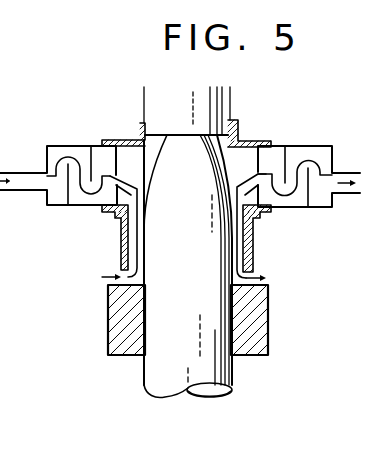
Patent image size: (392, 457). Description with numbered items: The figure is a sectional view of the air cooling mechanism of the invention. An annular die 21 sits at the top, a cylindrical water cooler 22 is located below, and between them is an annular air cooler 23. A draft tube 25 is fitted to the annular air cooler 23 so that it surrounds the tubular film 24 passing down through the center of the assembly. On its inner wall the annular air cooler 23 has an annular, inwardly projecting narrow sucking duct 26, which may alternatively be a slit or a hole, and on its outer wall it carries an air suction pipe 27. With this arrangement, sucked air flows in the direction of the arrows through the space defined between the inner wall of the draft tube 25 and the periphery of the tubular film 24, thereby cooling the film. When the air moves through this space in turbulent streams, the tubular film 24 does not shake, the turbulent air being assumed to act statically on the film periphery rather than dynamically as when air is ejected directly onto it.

The annular die 21 is at (231, 99).
The cylindrical water cooler 22 is at (268, 342).
The annular air cooler 23 is at (329, 146).
The tubular film 24 is at (229, 178).
The draft tube 25 is at (253, 265).
The sucking duct 26 is at (126, 181).
The air suction pipe 27 is at (21, 172).